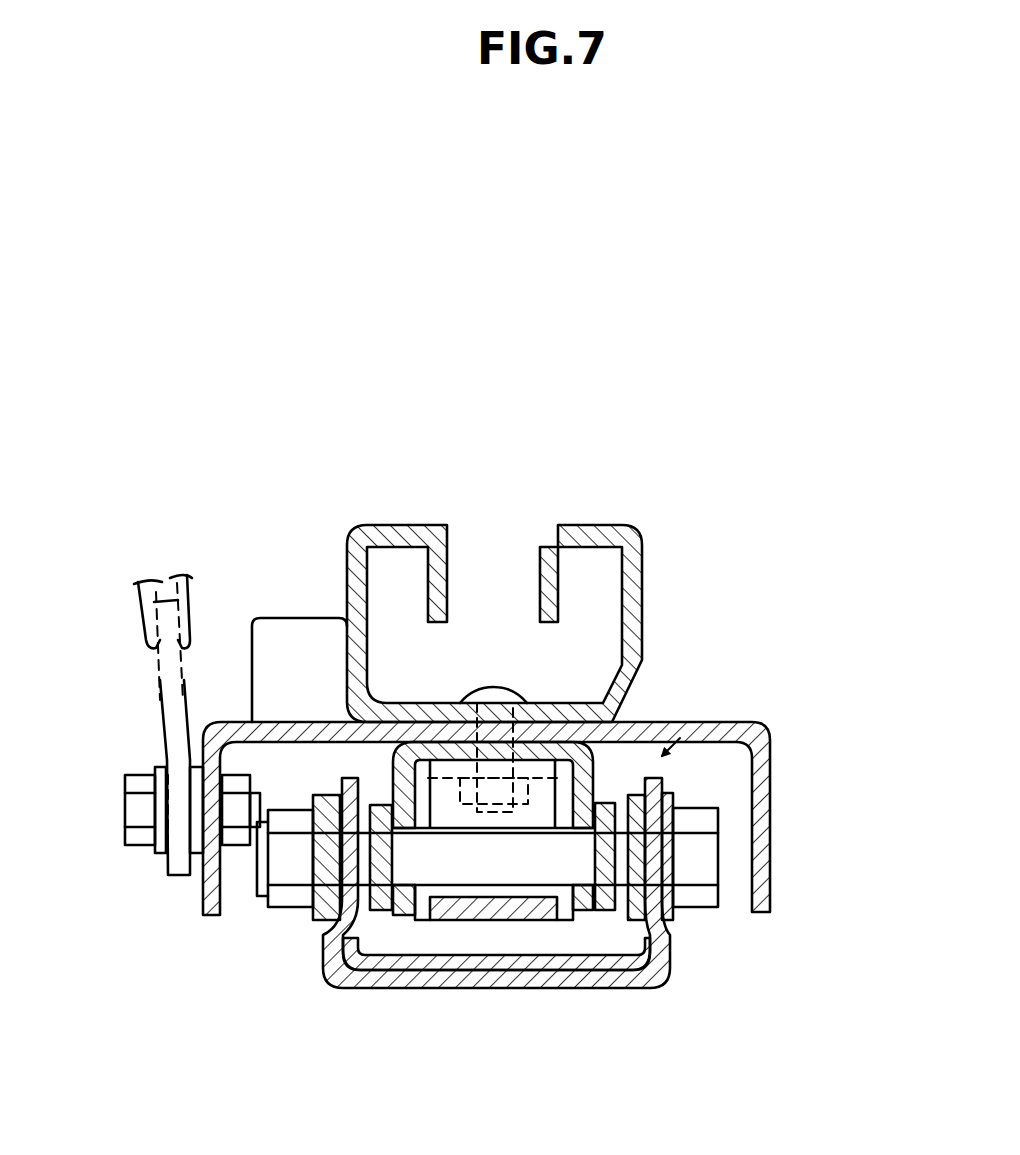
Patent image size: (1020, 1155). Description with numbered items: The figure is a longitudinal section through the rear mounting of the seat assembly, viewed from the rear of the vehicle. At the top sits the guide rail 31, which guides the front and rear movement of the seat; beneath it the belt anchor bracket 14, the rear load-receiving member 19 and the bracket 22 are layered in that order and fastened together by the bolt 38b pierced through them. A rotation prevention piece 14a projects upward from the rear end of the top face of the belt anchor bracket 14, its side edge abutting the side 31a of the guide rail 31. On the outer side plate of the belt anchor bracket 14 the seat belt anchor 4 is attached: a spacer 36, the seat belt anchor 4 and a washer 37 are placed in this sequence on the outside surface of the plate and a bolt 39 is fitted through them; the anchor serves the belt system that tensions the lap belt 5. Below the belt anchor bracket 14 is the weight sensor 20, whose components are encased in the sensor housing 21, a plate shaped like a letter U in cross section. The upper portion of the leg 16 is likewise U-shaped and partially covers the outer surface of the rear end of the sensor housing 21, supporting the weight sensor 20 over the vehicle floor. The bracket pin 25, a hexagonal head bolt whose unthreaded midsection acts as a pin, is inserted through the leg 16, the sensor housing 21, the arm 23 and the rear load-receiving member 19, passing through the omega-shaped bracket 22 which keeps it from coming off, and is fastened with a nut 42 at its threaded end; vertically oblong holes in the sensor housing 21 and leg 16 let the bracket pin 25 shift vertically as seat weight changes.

The seat belt anchor 4 is at (174, 725).
The lap belt 5 is at (142, 600).
The belt anchor bracket 14 is at (764, 818).
The rotation prevention piece 14a is at (298, 627).
The leg 16 is at (345, 976).
The rear load-receiving member 19 is at (625, 722).
The weight sensor 20 is at (730, 722).
The sensor housing 21 is at (409, 977).
The bracket 22 is at (500, 922).
The arm 23 is at (372, 946).
The bracket pin 25 is at (537, 872).
The guide rail 31 is at (637, 576).
The side of the guide rail 31a is at (345, 593).
The spacer 36 is at (200, 874).
The washer 37 is at (160, 856).
The bolt 38b is at (492, 690).
The bolt 39 is at (126, 806).
The bolt head 42 is at (288, 906).